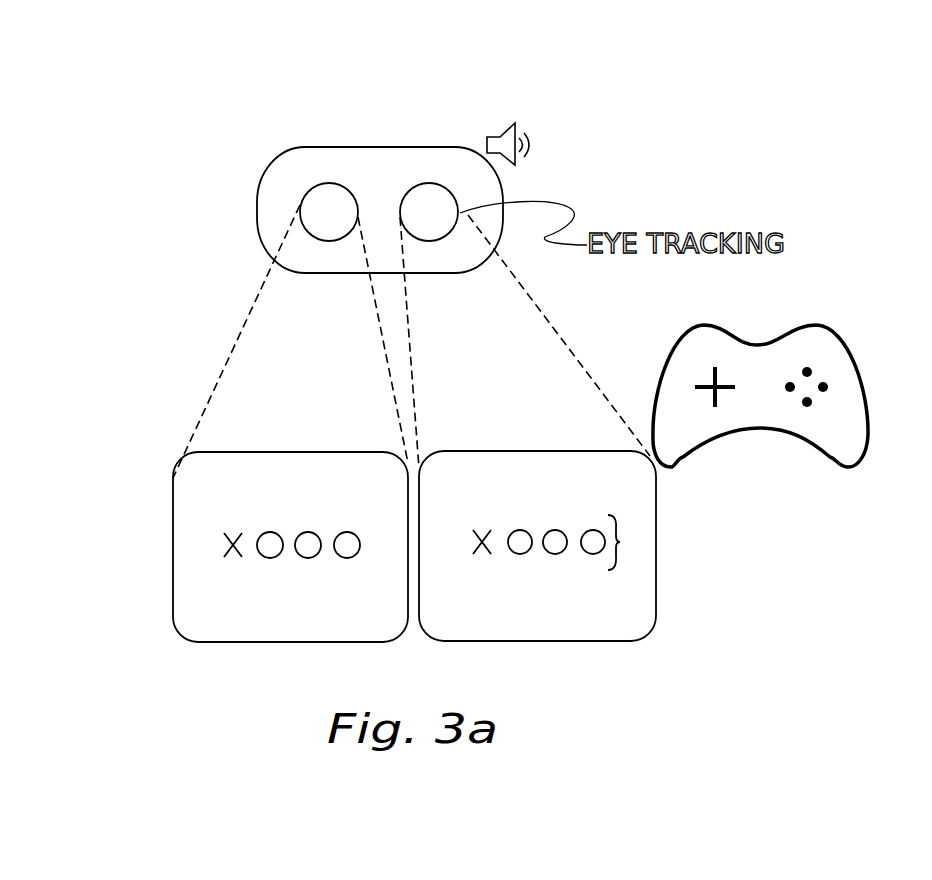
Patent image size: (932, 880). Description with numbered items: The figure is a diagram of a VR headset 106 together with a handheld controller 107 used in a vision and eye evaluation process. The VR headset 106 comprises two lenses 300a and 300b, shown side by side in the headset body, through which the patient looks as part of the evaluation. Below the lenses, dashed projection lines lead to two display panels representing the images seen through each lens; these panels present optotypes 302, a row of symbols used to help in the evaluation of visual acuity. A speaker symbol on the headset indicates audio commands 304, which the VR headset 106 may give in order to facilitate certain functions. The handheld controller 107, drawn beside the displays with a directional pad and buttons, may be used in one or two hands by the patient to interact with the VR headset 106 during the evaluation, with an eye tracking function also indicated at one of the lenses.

The VR headset 106 is at (257, 213).
The lens 300a is at (328, 193).
The lens 300b is at (433, 193).
The audio commands 304 is at (516, 124).
The optotypes 302 is at (620, 543).
The handheld controller 107 is at (797, 443).